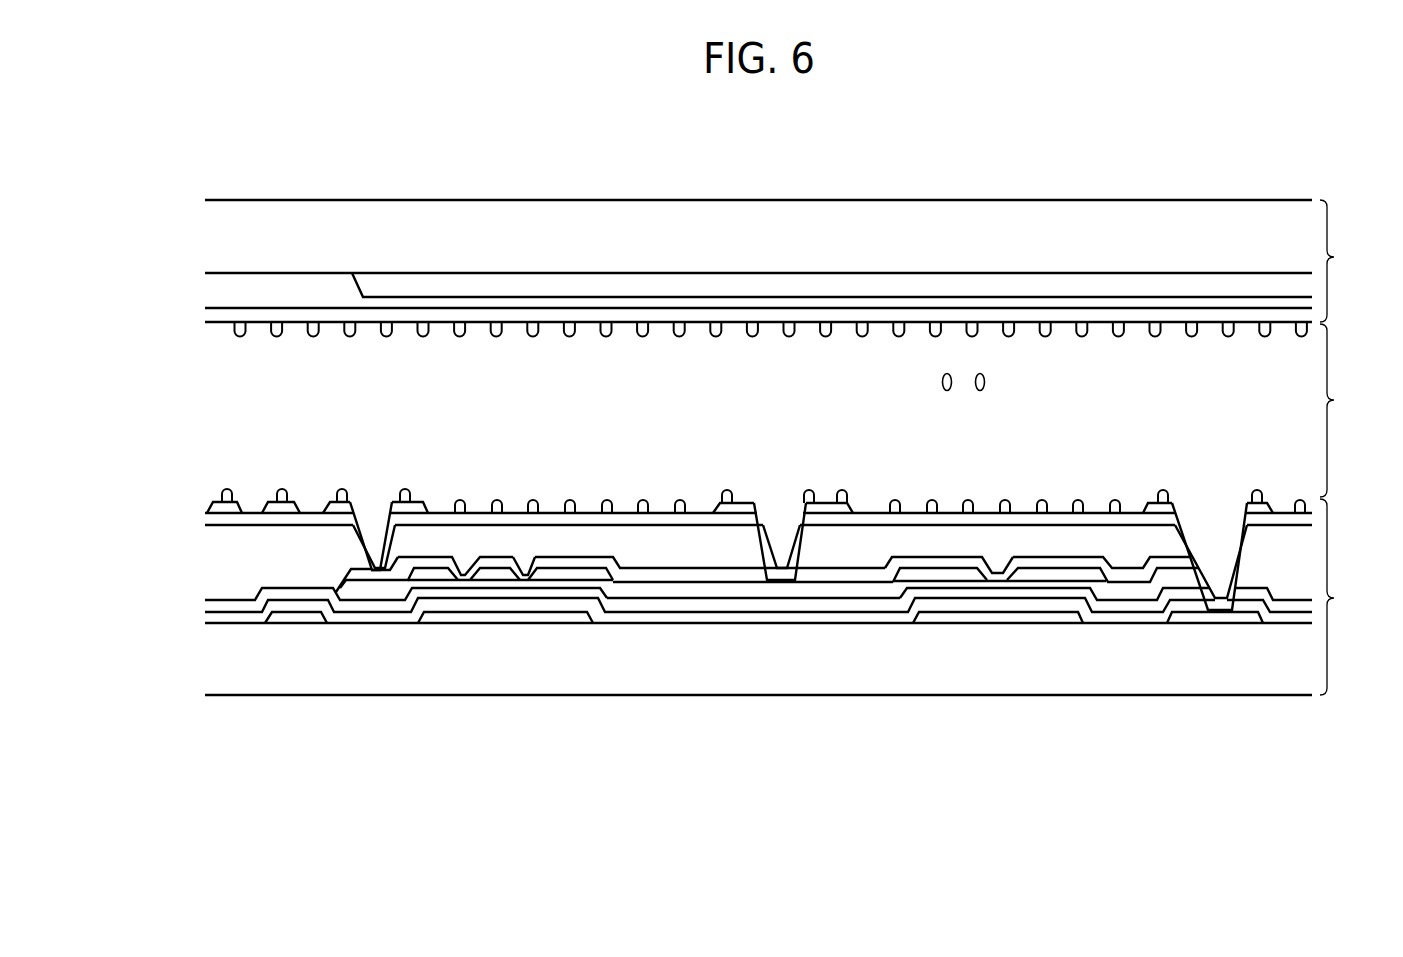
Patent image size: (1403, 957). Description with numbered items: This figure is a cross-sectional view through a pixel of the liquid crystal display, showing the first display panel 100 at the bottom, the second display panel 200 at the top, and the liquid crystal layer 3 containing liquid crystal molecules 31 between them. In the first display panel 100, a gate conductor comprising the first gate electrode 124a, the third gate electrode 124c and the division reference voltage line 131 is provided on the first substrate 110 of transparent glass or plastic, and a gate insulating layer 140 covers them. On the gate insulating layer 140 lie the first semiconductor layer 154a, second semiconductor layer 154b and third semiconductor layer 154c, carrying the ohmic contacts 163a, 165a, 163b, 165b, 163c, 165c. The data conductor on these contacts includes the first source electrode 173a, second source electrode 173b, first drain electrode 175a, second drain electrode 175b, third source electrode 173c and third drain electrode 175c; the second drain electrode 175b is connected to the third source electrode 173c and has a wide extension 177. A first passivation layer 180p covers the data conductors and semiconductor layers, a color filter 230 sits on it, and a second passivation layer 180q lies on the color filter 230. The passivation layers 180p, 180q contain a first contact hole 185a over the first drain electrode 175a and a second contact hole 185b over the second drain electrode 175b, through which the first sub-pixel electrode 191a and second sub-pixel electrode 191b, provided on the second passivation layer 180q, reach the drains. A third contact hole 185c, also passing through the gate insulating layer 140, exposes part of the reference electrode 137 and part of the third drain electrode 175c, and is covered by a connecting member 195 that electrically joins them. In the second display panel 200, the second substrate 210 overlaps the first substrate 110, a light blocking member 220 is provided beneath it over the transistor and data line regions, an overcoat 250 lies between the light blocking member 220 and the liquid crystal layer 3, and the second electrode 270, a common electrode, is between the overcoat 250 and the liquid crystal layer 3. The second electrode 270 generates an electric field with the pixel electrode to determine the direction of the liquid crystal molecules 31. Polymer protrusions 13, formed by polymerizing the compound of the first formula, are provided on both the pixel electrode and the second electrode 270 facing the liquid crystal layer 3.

The second display panel 200 is at (1346, 261).
The second substrate 210 is at (766, 216).
The light blocking member 220 is at (884, 286).
The overcoat 250 is at (286, 290).
The second electrode 270 is at (996, 318).
The liquid crystal layer 3 is at (1336, 410).
The protrusion 13 is at (825, 340).
The liquid crystal molecule 31 is at (985, 381).
The first display panel 100 is at (1346, 597).
The first substrate 110 is at (895, 670).
The first gate electrode 124a is at (458, 620).
The third gate electrode 124c is at (978, 618).
The division reference voltage line 131 is at (294, 618).
The reference electrode 137 is at (1213, 617).
The gate insulating layer 140 is at (802, 618).
The first semiconductor layer 154a is at (446, 593).
The second semiconductor layer 154b is at (543, 593).
The third semiconductor layer 154c is at (1023, 595).
The ohmic contact 163a is at (480, 583).
The ohmic contact 163b is at (505, 583).
The ohmic contact 163c is at (955, 585).
The ohmic contact 165a is at (361, 596).
The ohmic contact 165b is at (578, 583).
The ohmic contact 165c is at (1065, 585).
The first source electrode 173a is at (487, 572).
The second source electrode 173b is at (508, 577).
The third source electrode 173c is at (932, 577).
The first drain electrode 175a is at (382, 589).
The second drain electrode 175b is at (580, 580).
The third drain electrode 175c is at (1045, 577).
The extension 177 is at (838, 587).
The first passivation layer 180p is at (232, 605).
The second passivation layer 180q is at (632, 520).
The first contact hole 185a is at (358, 540).
The second contact hole 185b is at (763, 540).
The third contact hole 185c is at (1175, 545).
The first sub-pixel electrode 191a is at (220, 505).
The second sub-pixel electrode 191b is at (727, 507).
The connecting member 195 is at (1254, 504).
The color filter 230 is at (1123, 537).